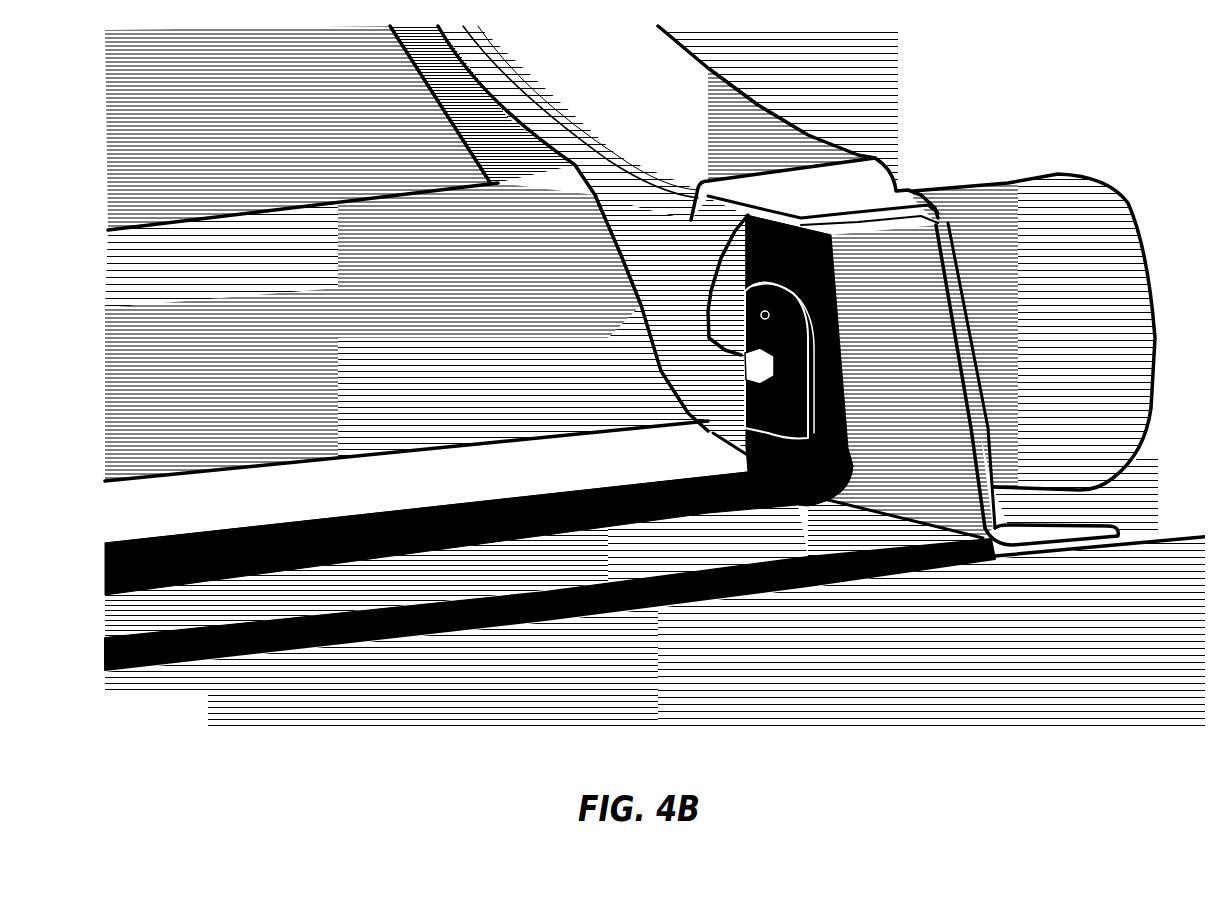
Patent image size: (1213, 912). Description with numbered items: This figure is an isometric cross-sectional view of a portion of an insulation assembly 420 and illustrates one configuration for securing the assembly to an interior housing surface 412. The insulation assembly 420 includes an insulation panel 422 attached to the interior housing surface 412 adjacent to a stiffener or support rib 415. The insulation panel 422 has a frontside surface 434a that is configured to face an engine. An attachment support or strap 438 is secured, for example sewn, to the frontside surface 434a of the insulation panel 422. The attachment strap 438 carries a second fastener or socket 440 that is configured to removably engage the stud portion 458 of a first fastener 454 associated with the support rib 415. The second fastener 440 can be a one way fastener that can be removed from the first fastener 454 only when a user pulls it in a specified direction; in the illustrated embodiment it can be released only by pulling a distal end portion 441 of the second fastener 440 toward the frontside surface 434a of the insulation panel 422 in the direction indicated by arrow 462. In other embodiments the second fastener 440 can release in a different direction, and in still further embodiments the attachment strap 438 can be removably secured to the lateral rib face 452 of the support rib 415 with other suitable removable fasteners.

The interior housing surface 412 is at (1050, 542).
The support rib 415 is at (987, 495).
The insulation assembly 420 is at (125, 343).
The insulation panel 422 is at (668, 543).
The frontside surface 434a is at (528, 578).
The attachment strap 438 is at (458, 527).
The second fastener 440 is at (760, 410).
The distal end portion 441 is at (750, 300).
The lateral rib face 452 is at (890, 305).
The first fastener 454 is at (793, 330).
The stud portion 458 is at (703, 303).
The arrow 462 is at (630, 334).